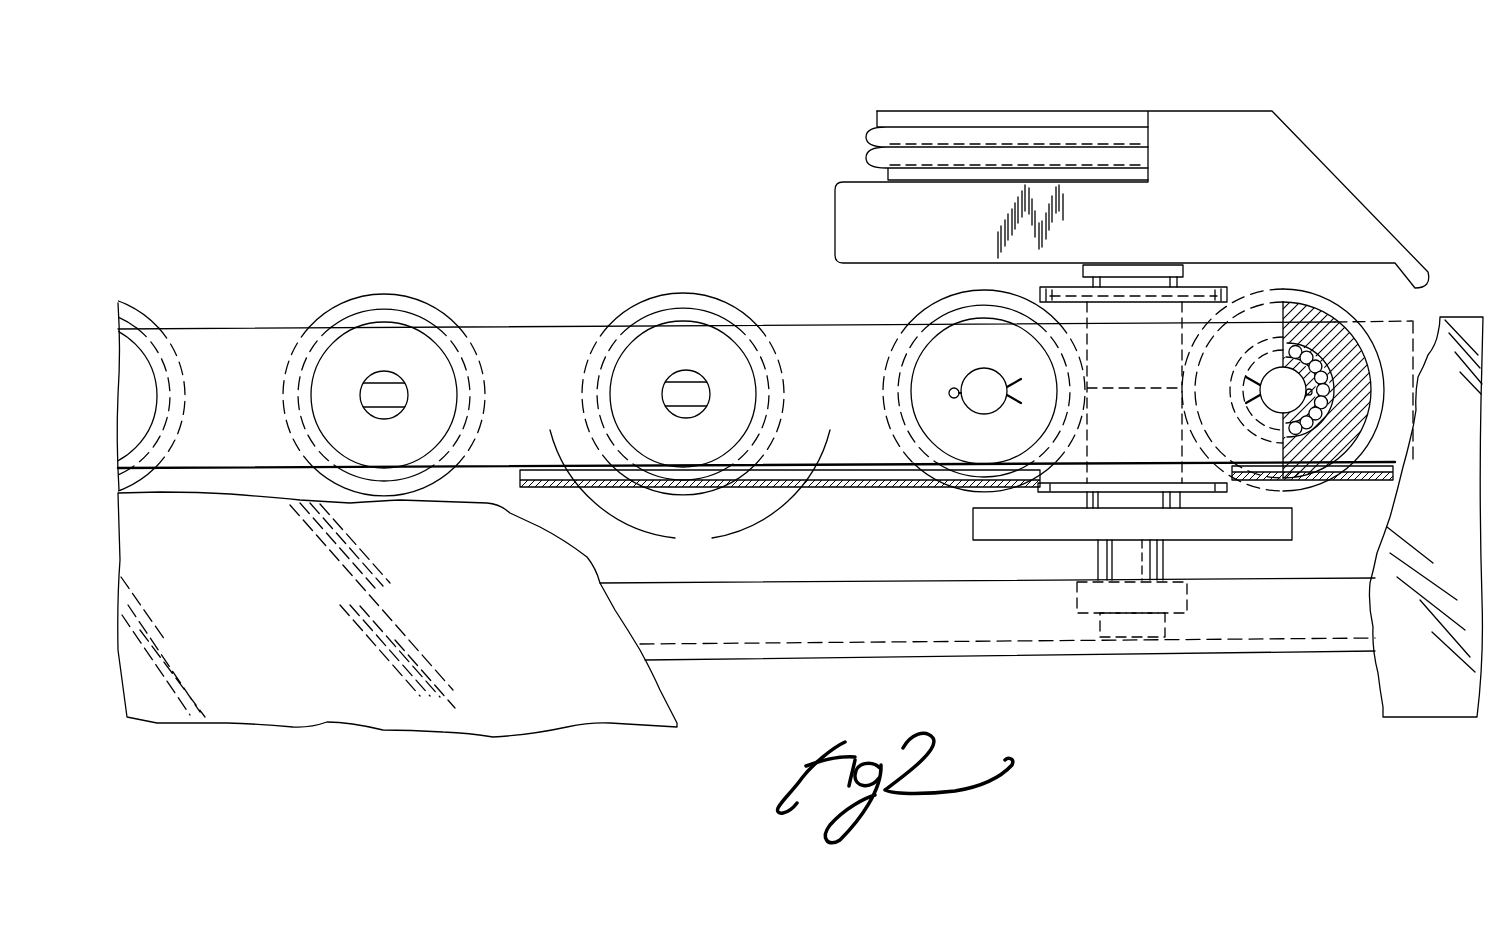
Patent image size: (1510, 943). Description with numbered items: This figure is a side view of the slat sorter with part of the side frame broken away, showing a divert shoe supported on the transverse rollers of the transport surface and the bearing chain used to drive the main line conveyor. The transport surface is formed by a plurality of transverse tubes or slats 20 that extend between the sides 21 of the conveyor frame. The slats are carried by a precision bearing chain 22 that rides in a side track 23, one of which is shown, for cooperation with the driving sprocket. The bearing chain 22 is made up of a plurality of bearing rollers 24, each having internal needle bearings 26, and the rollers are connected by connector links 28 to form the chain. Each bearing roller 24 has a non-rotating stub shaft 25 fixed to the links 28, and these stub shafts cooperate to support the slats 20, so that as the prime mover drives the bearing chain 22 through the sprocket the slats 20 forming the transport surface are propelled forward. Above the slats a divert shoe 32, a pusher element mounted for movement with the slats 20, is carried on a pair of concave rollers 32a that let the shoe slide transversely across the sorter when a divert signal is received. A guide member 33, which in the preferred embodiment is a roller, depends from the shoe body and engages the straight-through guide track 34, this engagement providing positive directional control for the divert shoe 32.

The transverse tubes or slats 20 is at (643, 307).
The sides of the conveyor frame 21 is at (520, 631).
The bearing chain 22 is at (775, 310).
The side track 23 is at (848, 478).
The bearing roller 24 is at (685, 310).
The stub shaft 25 is at (978, 377).
The needle bearings 26 is at (1307, 352).
The connector links 28 is at (675, 538).
The divert shoe 32 is at (1208, 175).
The concave rollers 32a is at (1130, 357).
The guide member 33 is at (1137, 605).
The straight-through guide track 34 is at (773, 618).